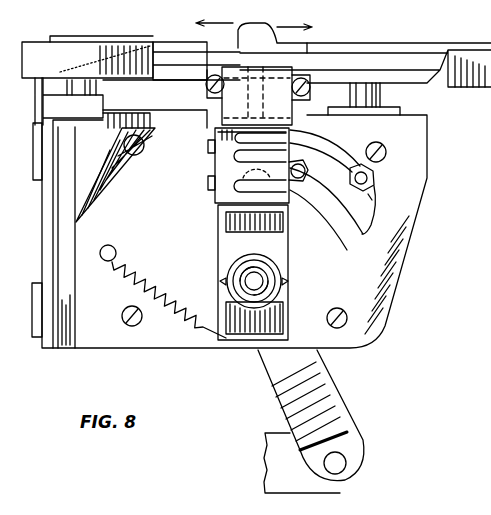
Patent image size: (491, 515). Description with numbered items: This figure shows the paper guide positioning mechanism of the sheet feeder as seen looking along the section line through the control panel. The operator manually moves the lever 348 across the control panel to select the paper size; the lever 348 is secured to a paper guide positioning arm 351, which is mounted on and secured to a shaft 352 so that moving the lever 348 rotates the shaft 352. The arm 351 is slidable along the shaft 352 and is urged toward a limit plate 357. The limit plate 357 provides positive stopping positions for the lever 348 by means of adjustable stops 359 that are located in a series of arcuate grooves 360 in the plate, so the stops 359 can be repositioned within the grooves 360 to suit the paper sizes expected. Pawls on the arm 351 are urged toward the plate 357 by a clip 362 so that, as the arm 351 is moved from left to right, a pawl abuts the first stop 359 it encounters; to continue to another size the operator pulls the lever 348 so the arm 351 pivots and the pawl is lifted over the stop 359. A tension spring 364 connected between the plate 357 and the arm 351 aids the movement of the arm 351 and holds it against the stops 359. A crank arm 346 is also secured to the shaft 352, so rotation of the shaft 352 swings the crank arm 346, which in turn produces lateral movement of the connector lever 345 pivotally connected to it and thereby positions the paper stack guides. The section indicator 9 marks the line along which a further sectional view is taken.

The lever 348 is at (253, 23).
The section line 9- 9 is at (163, 183).
The limit plate 357 is at (399, 272).
The clip 362 is at (214, 198).
The adjustable stops 359 is at (352, 166).
The arcuate grooves 360 is at (344, 247).
The paper guide positioning arm 351 is at (218, 246).
The shaft 352 is at (262, 292).
The tension spring 364 is at (134, 283).
The crank arm 346 is at (268, 386).
The connector lever 345 is at (265, 480).